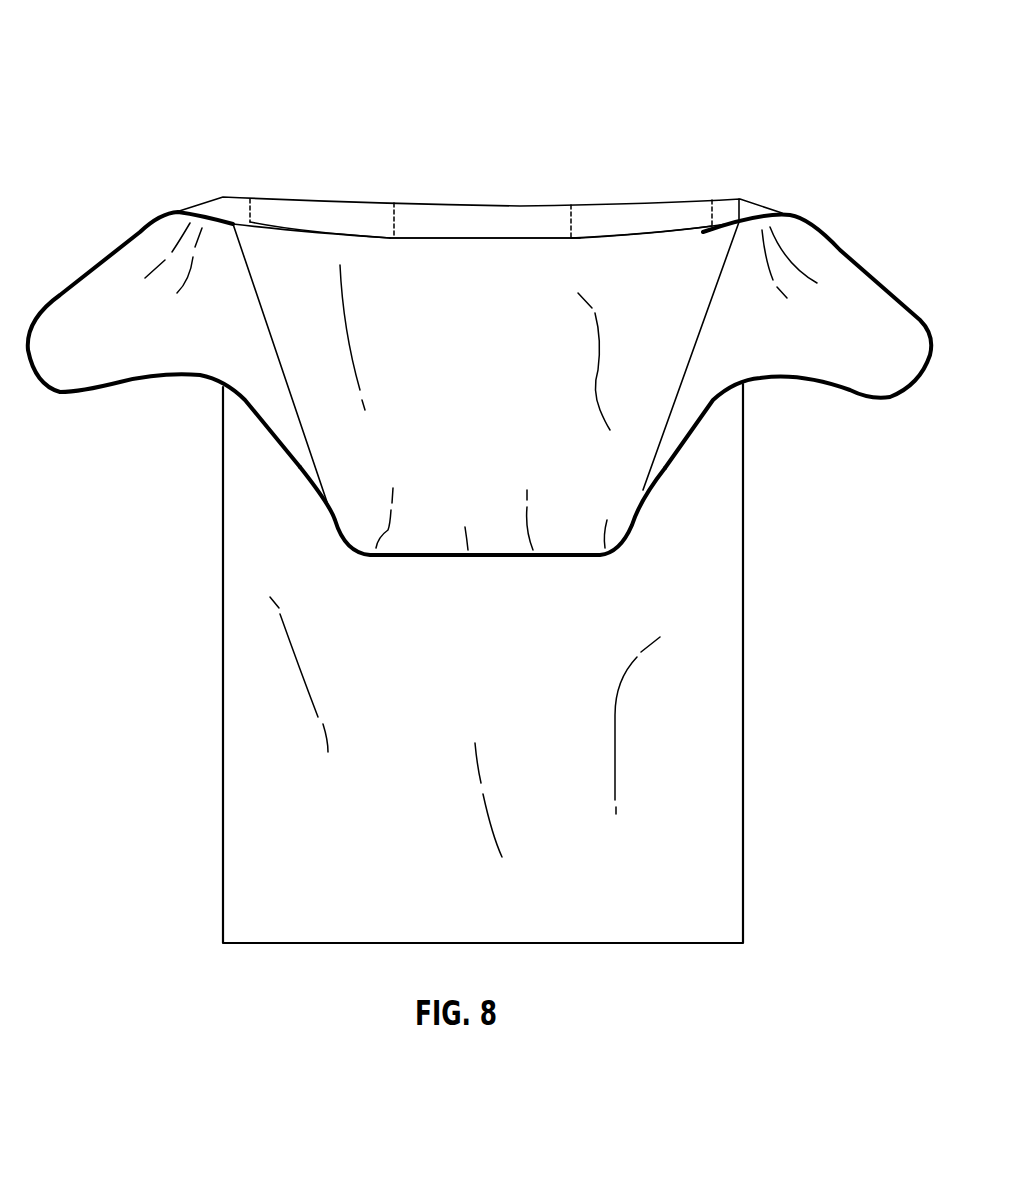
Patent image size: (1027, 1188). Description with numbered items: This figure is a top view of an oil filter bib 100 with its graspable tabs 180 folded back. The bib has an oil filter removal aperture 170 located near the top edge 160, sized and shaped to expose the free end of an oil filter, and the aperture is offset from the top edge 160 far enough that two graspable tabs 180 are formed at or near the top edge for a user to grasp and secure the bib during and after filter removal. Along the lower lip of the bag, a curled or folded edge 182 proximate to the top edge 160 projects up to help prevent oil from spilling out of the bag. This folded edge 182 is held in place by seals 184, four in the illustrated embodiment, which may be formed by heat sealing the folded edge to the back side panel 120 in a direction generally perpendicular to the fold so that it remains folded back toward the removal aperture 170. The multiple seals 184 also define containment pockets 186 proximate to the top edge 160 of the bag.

The oil filter bib 100 is at (168, 44).
The back side panel 120 is at (607, 467).
The top edge 160 is at (425, 204).
The oil filter removal aperture 170 is at (502, 557).
The graspable tabs 180 is at (75, 372).
The curled or folded edge 182 is at (448, 230).
The seals 184 is at (250, 198).
The containment pockets 186 is at (325, 218).